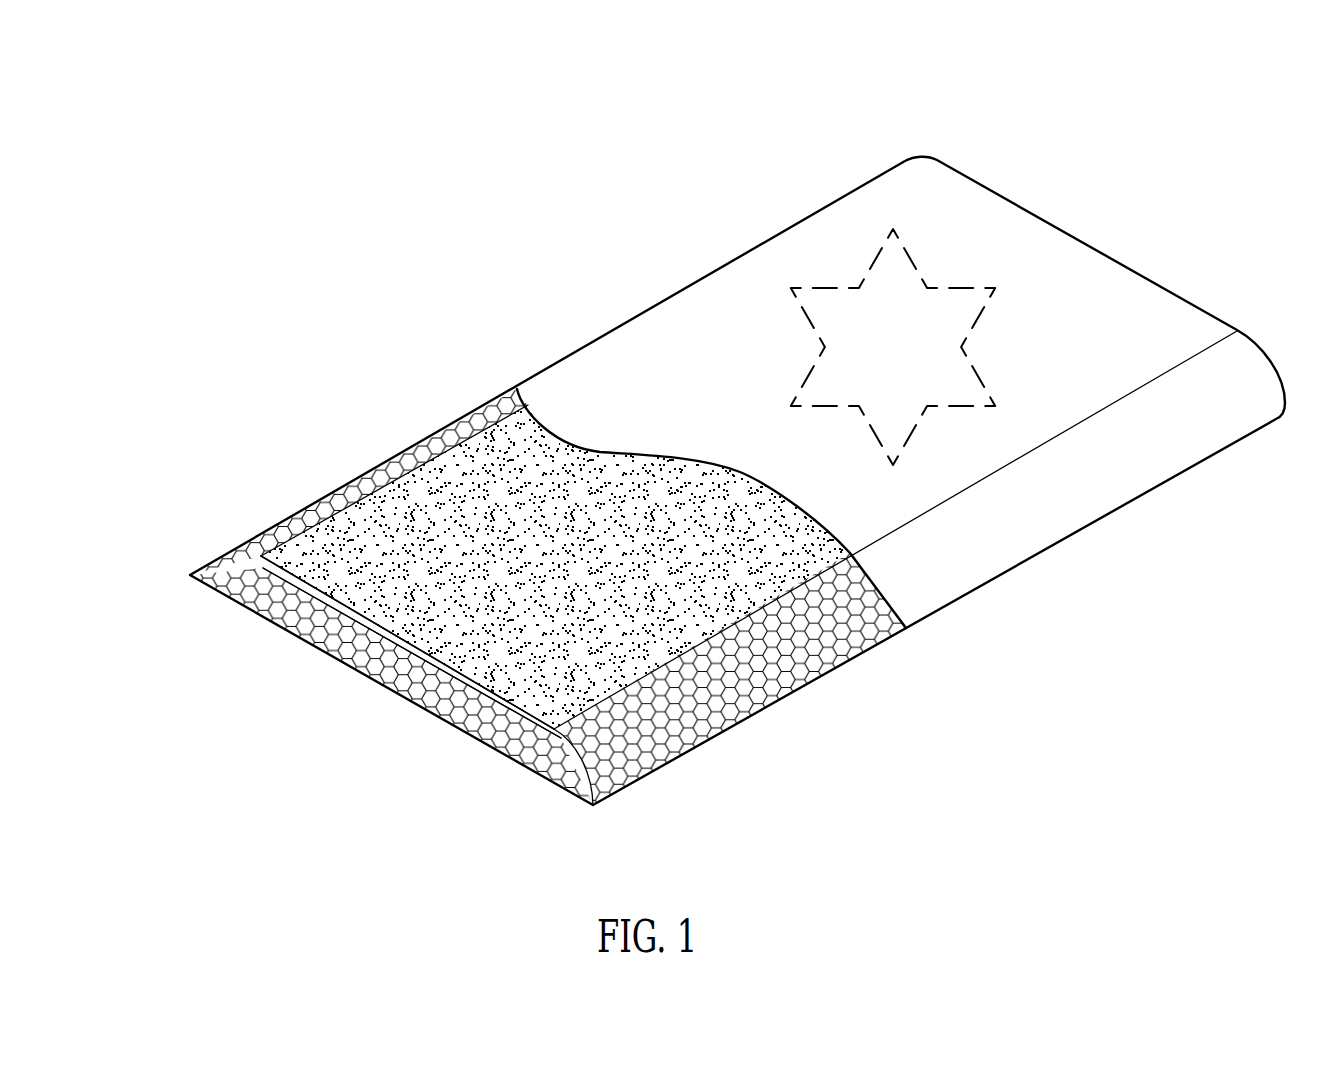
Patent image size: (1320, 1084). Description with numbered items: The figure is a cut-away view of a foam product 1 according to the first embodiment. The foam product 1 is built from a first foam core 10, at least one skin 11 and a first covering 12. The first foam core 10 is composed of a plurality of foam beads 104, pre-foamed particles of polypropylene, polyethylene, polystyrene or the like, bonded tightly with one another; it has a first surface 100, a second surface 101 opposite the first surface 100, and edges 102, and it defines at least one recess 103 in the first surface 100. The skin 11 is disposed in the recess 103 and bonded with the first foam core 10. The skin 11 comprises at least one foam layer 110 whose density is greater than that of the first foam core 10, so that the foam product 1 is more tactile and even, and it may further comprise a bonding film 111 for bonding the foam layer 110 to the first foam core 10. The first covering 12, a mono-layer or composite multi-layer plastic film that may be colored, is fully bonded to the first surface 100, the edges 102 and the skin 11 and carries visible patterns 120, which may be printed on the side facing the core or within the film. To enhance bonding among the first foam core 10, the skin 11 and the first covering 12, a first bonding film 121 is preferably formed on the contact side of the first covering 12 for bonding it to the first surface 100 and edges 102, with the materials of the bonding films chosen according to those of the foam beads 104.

The foam product 1 is at (607, 295).
The first foam core 10 is at (666, 572).
The first surface 100 is at (258, 555).
The second surface 101 is at (325, 649).
The edges 102 is at (217, 556).
The recess 103 is at (237, 601).
The foam beads 104 is at (460, 712).
The skin 11 is at (555, 517).
The foam layer 110 is at (387, 503).
The bonding film 111 is at (324, 606).
The first covering 12 is at (877, 401).
The patterns 120 is at (963, 287).
The first bonding film 121 is at (790, 500).